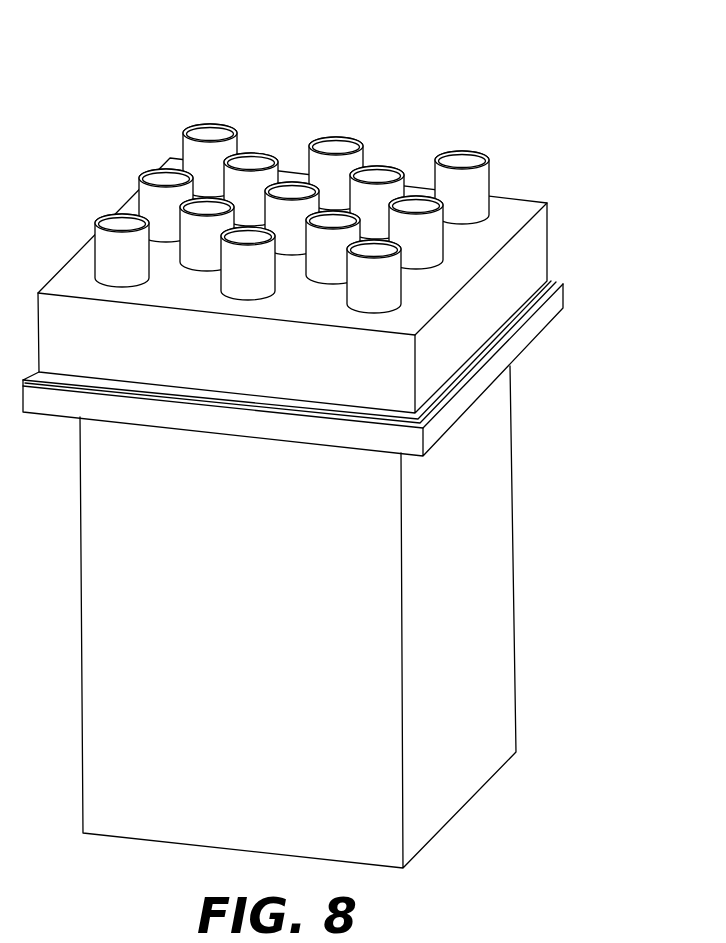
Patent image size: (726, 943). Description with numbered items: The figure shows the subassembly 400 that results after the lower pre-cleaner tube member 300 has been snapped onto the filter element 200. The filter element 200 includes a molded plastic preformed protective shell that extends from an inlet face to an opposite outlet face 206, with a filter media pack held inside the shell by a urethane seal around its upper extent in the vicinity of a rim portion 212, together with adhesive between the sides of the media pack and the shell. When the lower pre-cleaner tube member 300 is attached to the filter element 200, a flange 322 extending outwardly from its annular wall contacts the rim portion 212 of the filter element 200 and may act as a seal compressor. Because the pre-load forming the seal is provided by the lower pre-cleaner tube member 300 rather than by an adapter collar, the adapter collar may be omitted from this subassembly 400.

The sample handling assembly 400 is at (348, 442).
The filter element 200 is at (410, 127).
The lower pre-cleaner tube member 300 is at (210, 123).
The flange 322 is at (549, 279).
The rim portion 212 is at (567, 331).
The outlet face 206 is at (475, 797).